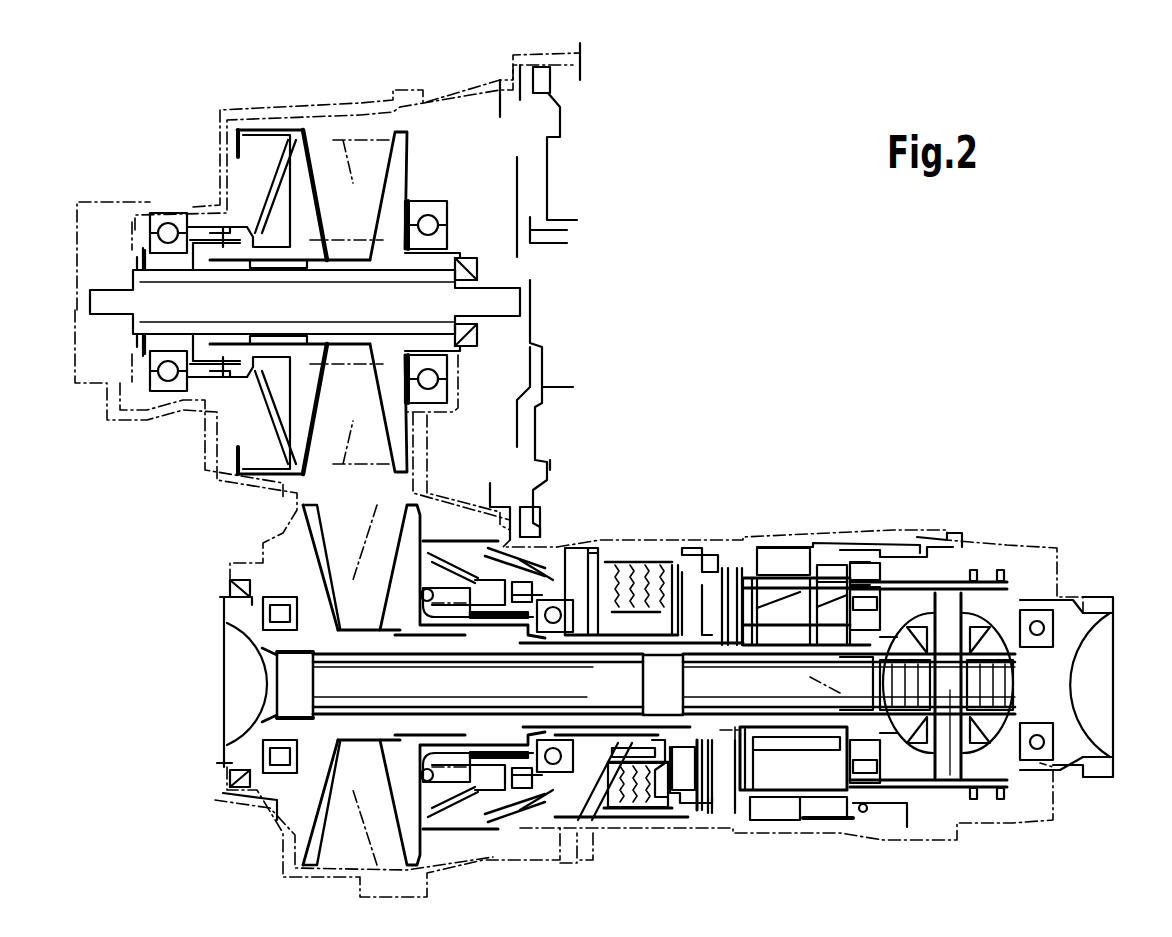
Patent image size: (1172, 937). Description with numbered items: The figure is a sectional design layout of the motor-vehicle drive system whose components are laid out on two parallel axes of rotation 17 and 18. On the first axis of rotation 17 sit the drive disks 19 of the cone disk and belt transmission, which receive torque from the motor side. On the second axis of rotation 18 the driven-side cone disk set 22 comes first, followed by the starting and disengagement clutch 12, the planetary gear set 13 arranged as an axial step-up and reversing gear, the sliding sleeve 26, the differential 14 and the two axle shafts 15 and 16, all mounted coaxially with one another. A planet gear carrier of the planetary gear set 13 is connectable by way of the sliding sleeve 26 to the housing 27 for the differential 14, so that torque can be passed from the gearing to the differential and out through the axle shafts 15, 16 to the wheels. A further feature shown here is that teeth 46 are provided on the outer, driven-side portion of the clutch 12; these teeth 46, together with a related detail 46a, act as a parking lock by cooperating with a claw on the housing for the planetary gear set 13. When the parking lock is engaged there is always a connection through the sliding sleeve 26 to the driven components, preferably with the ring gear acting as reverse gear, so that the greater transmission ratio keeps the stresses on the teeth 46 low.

The starting and disengagement clutch 12 is at (643, 530).
The planetary gear set 13 is at (845, 522).
The differential 14 is at (960, 525).
The axle shaft 15 is at (313, 702).
The axle shaft 16 is at (1057, 687).
The axis of rotation 17 is at (630, 302).
The axis of rotation 18 is at (175, 685).
The drive disks 19 is at (376, 221).
The driven-side cone disk set 22 is at (387, 790).
The sliding sleeve 26 is at (950, 593).
The housing for the differential 27 is at (983, 613).
The teeth 46 is at (720, 545).
The pressure element part 46a is at (697, 548).